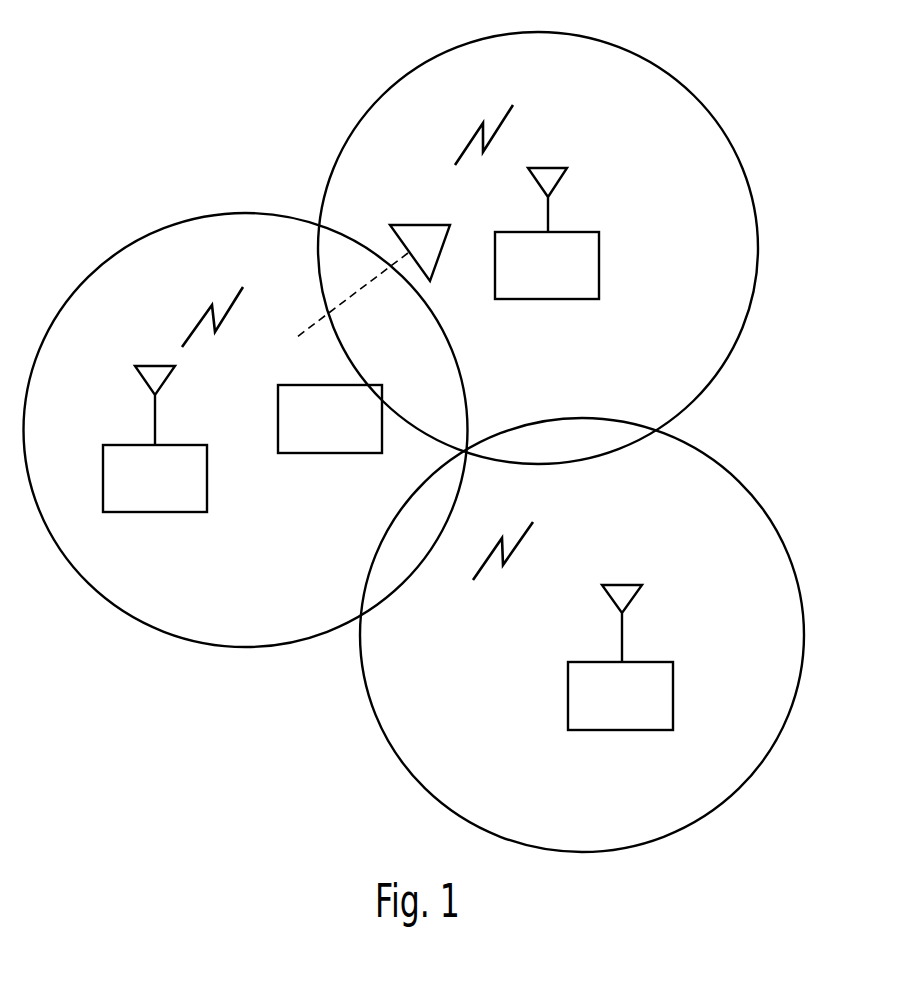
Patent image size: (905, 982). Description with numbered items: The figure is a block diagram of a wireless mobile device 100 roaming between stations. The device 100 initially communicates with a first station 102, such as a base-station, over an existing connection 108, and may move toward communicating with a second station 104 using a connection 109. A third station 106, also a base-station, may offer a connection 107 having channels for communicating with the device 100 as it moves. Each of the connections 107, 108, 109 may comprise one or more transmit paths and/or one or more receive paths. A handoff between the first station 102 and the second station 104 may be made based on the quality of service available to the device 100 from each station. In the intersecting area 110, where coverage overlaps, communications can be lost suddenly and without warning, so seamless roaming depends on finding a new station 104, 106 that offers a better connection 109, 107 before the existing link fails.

The wireless mobile device 100 is at (363, 382).
The first station 102 is at (189, 442).
The second station 104 is at (582, 230).
The third station 106 is at (657, 660).
The connection 107 is at (517, 543).
The connection 108 is at (197, 323).
The connection 109 is at (468, 140).
The intersecting area 110 is at (467, 453).